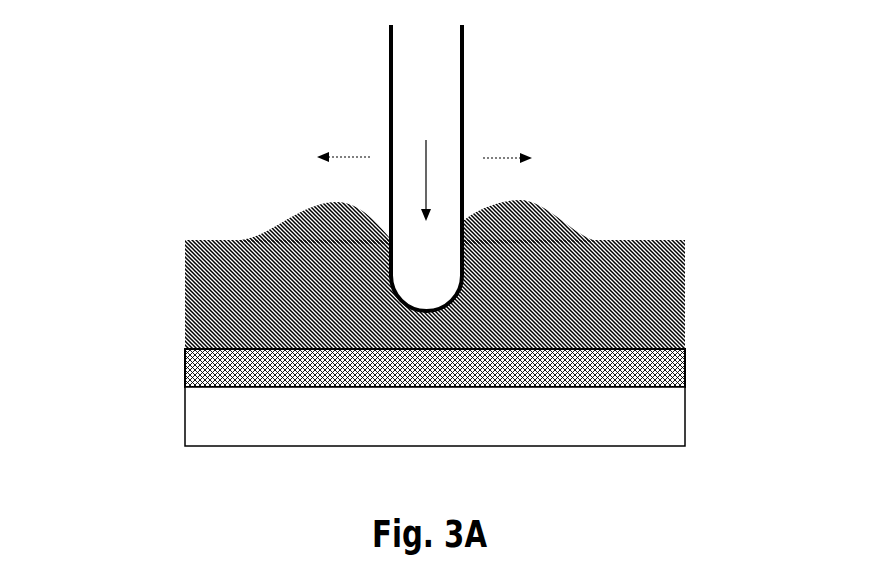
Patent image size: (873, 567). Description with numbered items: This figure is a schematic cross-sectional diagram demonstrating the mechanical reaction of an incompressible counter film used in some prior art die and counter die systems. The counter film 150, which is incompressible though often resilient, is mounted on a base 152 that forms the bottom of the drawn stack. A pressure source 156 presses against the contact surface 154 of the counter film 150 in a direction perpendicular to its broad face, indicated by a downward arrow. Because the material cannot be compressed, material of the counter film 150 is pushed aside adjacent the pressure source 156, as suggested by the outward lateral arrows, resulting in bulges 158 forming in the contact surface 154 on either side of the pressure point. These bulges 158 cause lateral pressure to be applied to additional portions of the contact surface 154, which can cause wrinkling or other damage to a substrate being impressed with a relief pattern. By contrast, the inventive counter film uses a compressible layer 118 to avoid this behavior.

The compressible layer 118 is at (215, 305).
The counter film 150 is at (207, 372).
The base 152 is at (225, 430).
The contact surface 154 is at (421, 284).
The pressure source 156 is at (412, 122).
The bulges 158 is at (313, 203).